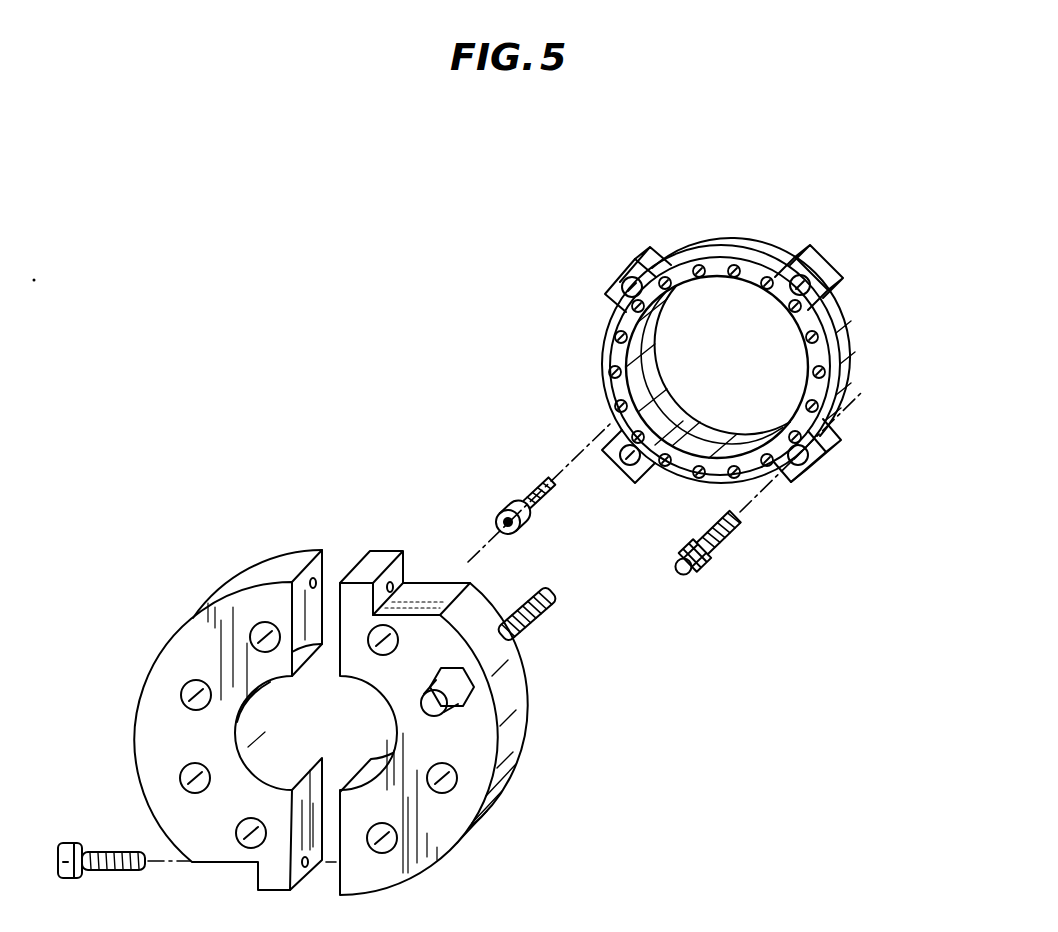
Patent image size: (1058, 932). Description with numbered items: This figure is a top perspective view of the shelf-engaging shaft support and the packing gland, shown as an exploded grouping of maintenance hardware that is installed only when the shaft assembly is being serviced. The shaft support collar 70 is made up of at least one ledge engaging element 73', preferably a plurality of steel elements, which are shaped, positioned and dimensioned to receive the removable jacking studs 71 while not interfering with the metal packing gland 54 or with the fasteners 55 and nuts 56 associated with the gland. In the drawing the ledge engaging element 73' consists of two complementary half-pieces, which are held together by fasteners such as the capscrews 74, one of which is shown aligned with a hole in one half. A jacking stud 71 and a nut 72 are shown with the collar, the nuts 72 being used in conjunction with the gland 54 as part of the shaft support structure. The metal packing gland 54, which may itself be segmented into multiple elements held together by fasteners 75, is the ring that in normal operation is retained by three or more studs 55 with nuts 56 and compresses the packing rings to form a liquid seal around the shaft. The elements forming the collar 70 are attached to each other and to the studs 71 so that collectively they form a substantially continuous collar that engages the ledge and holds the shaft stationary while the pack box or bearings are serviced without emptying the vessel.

The shaft support collar 70 is at (266, 350).
The metal packing gland 54 is at (866, 297).
The stud 55 is at (736, 530).
The nut 56 is at (716, 585).
The fastener 75 is at (503, 488).
The ledge engaging element 73' is at (359, 722).
The jacking stud 71 is at (553, 617).
The nut 72 is at (462, 718).
The capscrew 74 is at (120, 836).